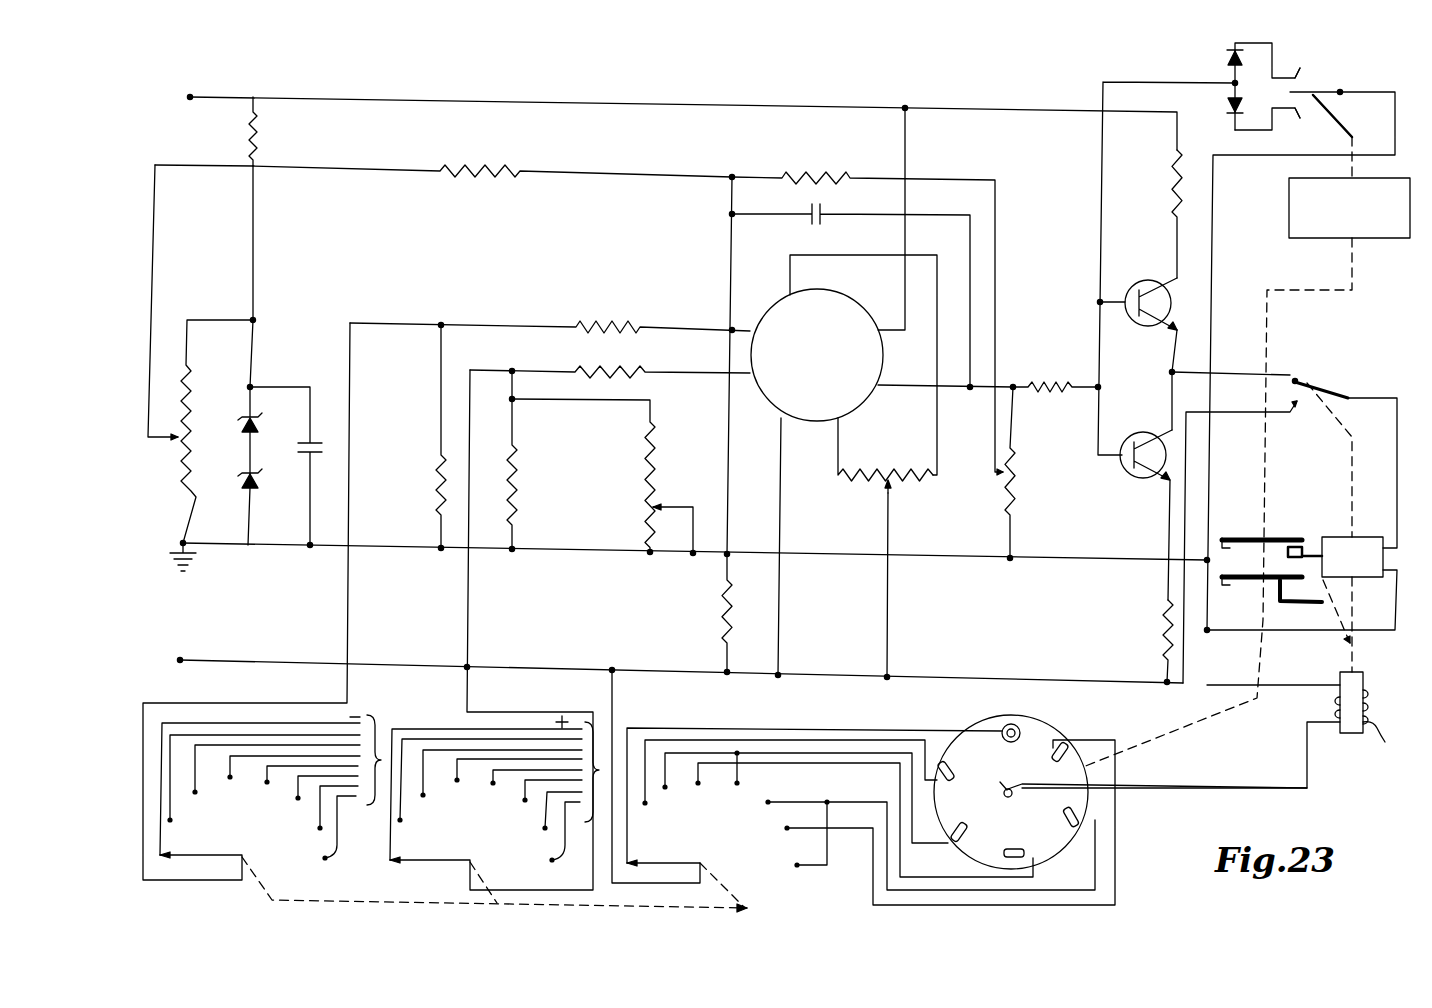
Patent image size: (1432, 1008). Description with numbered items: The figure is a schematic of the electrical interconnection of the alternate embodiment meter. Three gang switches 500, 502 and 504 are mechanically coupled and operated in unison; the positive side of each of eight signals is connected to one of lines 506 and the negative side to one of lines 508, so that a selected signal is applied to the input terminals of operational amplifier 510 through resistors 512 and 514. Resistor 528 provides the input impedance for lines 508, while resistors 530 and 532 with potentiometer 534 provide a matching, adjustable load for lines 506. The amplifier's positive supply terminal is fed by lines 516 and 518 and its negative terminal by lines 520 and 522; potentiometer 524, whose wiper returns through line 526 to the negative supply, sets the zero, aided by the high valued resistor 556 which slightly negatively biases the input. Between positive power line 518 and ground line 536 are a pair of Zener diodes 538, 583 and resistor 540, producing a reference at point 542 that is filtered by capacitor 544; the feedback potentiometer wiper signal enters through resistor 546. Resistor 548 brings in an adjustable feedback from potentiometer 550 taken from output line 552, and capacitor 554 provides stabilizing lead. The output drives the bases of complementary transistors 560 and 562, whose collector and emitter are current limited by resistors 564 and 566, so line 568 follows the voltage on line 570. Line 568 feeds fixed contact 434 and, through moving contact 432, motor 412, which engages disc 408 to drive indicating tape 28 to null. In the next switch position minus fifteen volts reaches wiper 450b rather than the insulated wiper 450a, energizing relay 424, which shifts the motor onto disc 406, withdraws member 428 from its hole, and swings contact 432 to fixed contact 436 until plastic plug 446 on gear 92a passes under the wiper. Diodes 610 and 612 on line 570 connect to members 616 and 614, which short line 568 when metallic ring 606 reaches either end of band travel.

The positive power line 518 is at (834, 108).
The line 516 is at (905, 151).
The resistor 540 is at (255, 134).
The resistor 546 is at (512, 166).
The resistor 548 is at (822, 176).
The capacitor 554 is at (809, 215).
The point 542 is at (213, 320).
The Zener diodes 538 is at (246, 415).
The zener diode 583 is at (242, 487).
The capacitor 544 is at (316, 446).
The ground line 536 is at (276, 548).
The resistor 512 is at (576, 321).
The resistor 514 is at (634, 371).
The resistor 528 is at (436, 472).
The resistor 530 is at (520, 482).
The resistor 532 is at (658, 457).
The potentiometer 534 is at (646, 514).
The resistor 556 is at (724, 612).
The operational amplifier 510 is at (780, 310).
The line 520 is at (779, 615).
The potentiometer 524 is at (886, 474).
The line 526 is at (889, 624).
The negative power supply line 522 is at (528, 668).
The potentiometer 550 is at (1012, 486).
The line 552 is at (1028, 386).
The line 570 is at (1098, 304).
The transistor 560 is at (1142, 288).
The current limiting resistor 564 is at (1174, 178).
The transistor 562 is at (1138, 438).
The current limiting resistor 566 is at (1160, 634).
The line 568 is at (1242, 374).
The fixed contact 434 is at (1300, 380).
The moving contact 432 is at (1318, 378).
The fixed contact 436 is at (1288, 410).
The metallic ring 606 is at (1328, 92).
The diode 610 is at (1229, 60).
The diode 612 is at (1231, 114).
The member 616 is at (1296, 84).
The member 614 is at (1290, 108).
The indicating tape 28 is at (1370, 238).
The motor 412 is at (1356, 536).
The disc 408 is at (1280, 540).
The disc 406 is at (1228, 584).
The member 428 is at (1283, 606).
The relay 424 is at (1304, 668).
The gear 92a is at (1053, 740).
The plastic plug 446 is at (1006, 728).
The wiper 450a is at (1000, 730).
The wiper 450b is at (985, 790).
The gang switch 504 is at (662, 864).
The gang switch 500 is at (235, 838).
The lines 508 is at (374, 742).
The gang switch 502 is at (434, 860).
The lines 506 is at (596, 720).